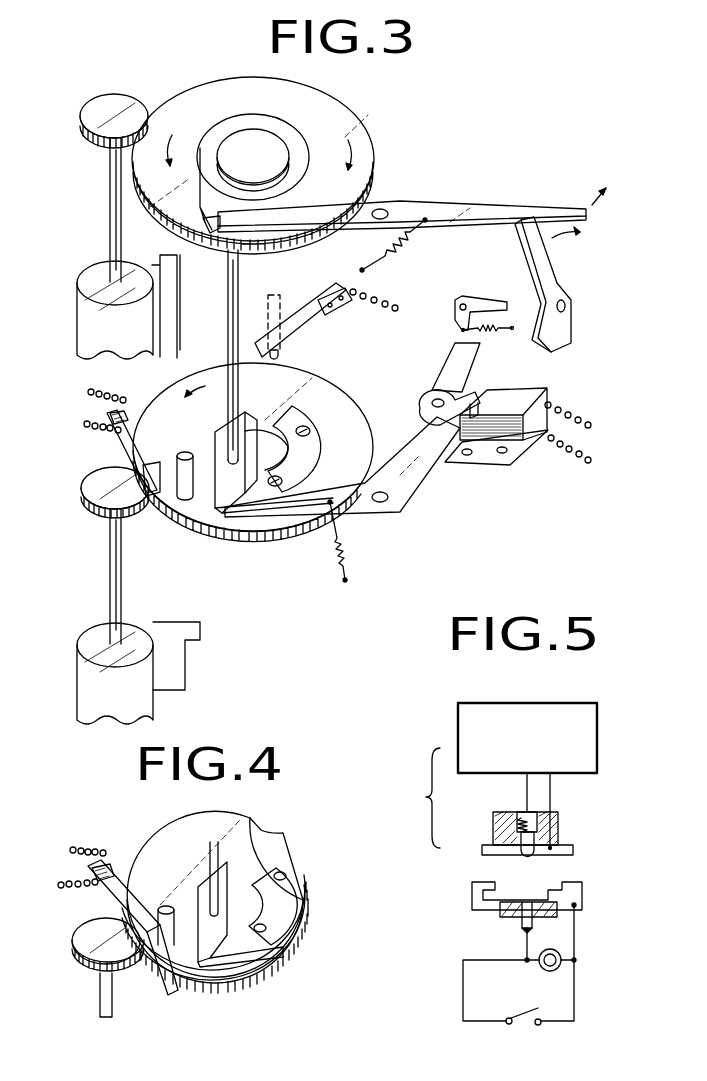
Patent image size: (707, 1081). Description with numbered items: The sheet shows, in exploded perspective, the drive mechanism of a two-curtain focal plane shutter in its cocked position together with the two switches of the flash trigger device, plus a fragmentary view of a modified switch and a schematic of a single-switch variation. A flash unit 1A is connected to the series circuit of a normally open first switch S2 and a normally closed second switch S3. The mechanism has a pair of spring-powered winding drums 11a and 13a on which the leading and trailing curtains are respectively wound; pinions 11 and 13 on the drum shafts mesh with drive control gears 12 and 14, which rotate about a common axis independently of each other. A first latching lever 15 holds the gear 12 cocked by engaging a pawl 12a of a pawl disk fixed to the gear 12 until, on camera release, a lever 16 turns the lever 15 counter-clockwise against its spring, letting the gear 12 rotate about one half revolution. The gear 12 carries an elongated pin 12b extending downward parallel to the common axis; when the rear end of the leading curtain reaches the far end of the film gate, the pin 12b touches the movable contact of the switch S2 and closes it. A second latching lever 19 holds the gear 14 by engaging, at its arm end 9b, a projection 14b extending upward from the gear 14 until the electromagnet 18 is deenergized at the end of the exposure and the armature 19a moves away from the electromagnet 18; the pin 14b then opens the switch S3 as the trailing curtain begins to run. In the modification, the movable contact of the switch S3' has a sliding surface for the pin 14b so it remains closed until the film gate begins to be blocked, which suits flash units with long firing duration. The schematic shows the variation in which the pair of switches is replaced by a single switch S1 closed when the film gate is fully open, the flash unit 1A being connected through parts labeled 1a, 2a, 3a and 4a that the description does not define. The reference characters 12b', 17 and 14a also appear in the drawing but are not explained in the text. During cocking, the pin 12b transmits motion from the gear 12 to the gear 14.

In FIG. 3, the pinion 11 is at (92, 118).
In FIG. 3, the winding drum 11a is at (90, 313).
In FIG. 3, the drive control gear 12 is at (365, 146).
In FIG. 3, the pawl 12a is at (213, 240).
In FIG. 3, the elongated pin 12b is at (214, 357).
In FIG. 3, the shaft position (dashed) 12b' is at (294, 310).
In FIG. 3, the first switch S2 is at (340, 311).
In FIG. 3, the first latching lever 15 is at (499, 212).
In FIG. 3, the lever 16 is at (552, 268).
In FIG. 3, the hook lever 17 is at (477, 300).
In FIG. 3, the armature 19a is at (472, 392).
In FIG. 3, the second latching lever 19 is at (356, 518).
In FIG. 3, the electromagnet 18 is at (530, 392).
In FIG. 3, the drive control gear 14 is at (337, 394).
In FIG. 4, the drive control gear 14 is at (258, 845).
In FIG. 3, the arm end 9b is at (270, 498).
In FIG. 3, the bracket of disc 14 14a is at (228, 487).
In FIG. 3, the projection 14b is at (197, 494).
In FIG. 4, the projection 14b is at (180, 962).
In FIG. 3, the second switch S3 is at (122, 435).
In FIG. 4, the modified second switch S3' is at (118, 909).
In FIG. 3, the pinion 13 is at (93, 489).
In FIG. 4, the pinion 13 is at (108, 967).
In FIG. 3, the winding drum 13a is at (88, 674).
In FIG. 5, the flash unit 1A is at (505, 780).
In FIG. 5, the accessory shoe 1a is at (578, 894).
In FIG. 5, the shoe contact pin 2a is at (527, 900).
In FIG. 5, the insulating contact block 3a is at (510, 918).
In FIG. 5, the indicator lamp 4a is at (563, 953).
In FIG. 5, the single switch S1 is at (519, 978).